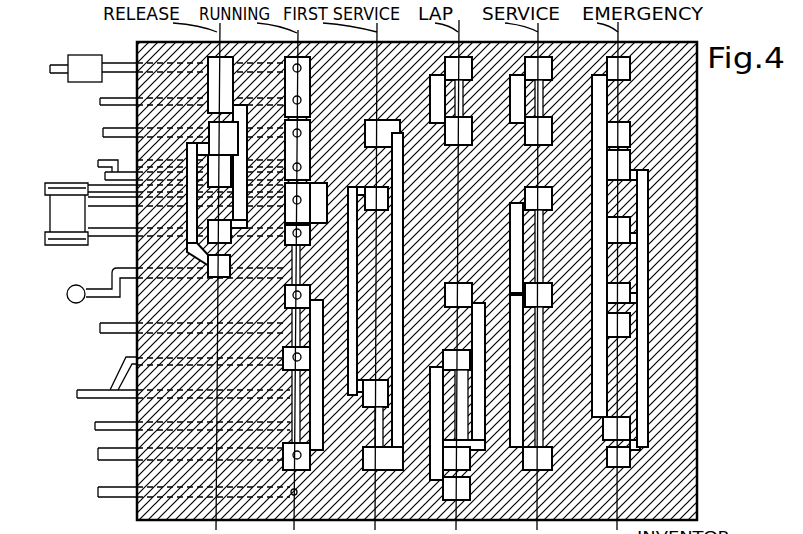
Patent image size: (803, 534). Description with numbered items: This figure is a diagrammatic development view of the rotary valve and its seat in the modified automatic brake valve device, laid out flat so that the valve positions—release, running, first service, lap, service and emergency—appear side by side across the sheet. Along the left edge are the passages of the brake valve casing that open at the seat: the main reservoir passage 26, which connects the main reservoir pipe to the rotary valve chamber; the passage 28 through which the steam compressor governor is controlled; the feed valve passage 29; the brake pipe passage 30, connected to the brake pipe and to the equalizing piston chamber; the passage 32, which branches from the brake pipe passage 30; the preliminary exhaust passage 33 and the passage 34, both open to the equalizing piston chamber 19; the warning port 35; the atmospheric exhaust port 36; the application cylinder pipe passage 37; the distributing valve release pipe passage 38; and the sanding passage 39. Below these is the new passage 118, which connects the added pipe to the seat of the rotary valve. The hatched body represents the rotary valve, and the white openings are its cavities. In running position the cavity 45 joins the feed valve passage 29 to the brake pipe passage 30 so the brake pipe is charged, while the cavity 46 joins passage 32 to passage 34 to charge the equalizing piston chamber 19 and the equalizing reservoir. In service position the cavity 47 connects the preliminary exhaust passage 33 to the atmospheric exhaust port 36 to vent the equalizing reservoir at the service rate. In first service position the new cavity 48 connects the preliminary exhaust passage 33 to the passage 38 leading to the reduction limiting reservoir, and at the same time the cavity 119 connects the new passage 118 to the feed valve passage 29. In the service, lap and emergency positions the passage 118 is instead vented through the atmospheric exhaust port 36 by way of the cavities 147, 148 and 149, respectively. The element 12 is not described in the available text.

The brake pipe 12 is at (86, 57).
The main reservoir passage 26 is at (53, 66).
The passage 28 is at (105, 100).
The feed valve passage 29 is at (103, 131).
The brake pipe passage 30 is at (110, 163).
The passage 32 is at (108, 176).
The equalizing piston chamber 19 is at (60, 212).
The preliminary exhaust passage 33 is at (97, 200).
The passage 34 is at (97, 233).
The warning port 35 is at (110, 274).
The atmospheric exhaust port 36 is at (68, 290).
The application cylinder pipe passage 37 is at (100, 328).
The distributing valve release pipe passage 38 is at (78, 392).
The sanding passage 39 is at (98, 425).
The passage 118 is at (100, 455).
The cavity 45 is at (303, 152).
The cavity 46 is at (303, 178).
The cavity 47 is at (517, 254).
The cavity 48 is at (352, 273).
The cavity 119 is at (298, 492).
The cavity 147 is at (538, 433).
The cavity 148 is at (478, 435).
The cavity 149 is at (660, 403).